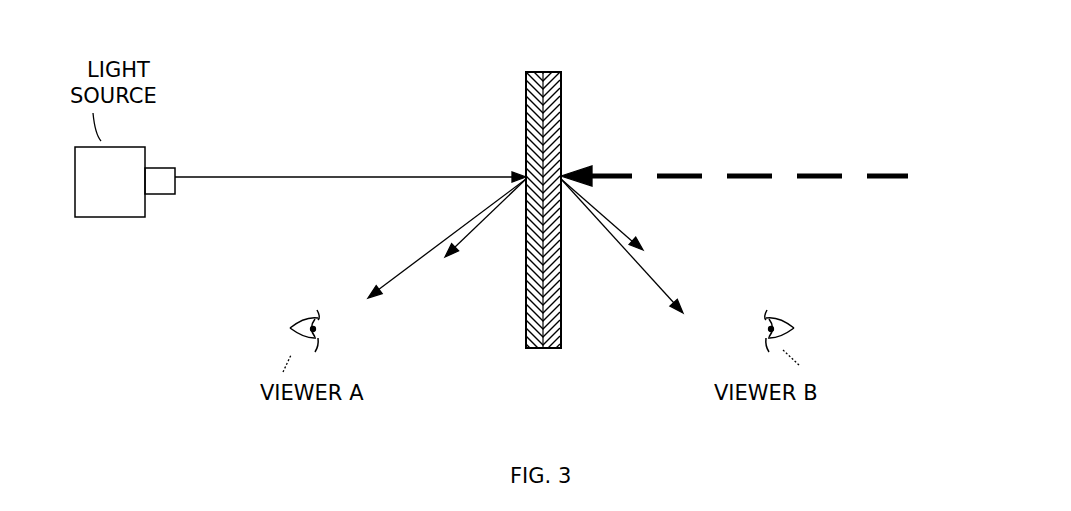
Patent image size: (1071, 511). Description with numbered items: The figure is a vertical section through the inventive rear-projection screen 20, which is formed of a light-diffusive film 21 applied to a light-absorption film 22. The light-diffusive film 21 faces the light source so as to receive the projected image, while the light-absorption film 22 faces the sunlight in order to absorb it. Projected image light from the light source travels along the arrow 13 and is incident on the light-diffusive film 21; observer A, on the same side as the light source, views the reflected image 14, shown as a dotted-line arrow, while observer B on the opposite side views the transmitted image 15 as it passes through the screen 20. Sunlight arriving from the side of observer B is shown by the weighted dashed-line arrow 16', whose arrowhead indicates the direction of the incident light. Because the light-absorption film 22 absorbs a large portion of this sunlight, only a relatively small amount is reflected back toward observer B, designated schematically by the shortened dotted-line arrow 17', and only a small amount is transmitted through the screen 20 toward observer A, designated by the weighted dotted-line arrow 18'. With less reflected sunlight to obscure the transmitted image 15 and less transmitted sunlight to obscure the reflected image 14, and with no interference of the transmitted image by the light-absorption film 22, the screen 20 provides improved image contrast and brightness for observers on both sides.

The projected image light arrow 13 is at (345, 173).
The reflected image 14 is at (442, 238).
The transmitted image 15 is at (597, 232).
The sunlight arrow 16' is at (734, 158).
The reflected sunlight arrow 17' is at (615, 214).
The transmitted sunlight arrow 18' is at (485, 227).
The screen 20 is at (526, 95).
The light-diffusive film 21 is at (526, 130).
The light-absorption film 22 is at (561, 111).